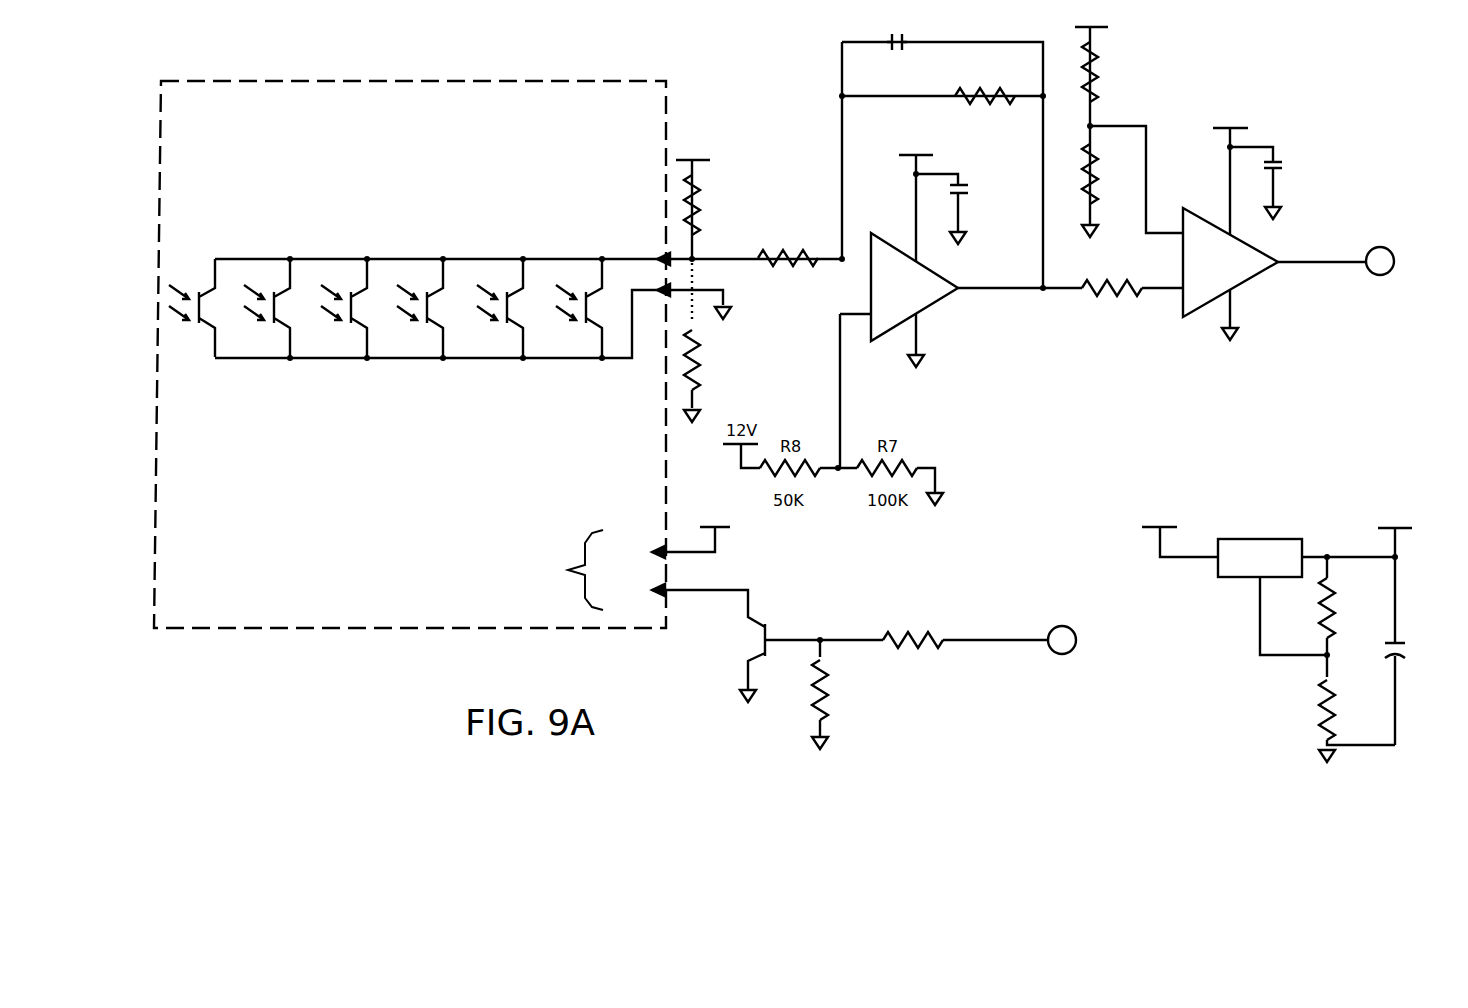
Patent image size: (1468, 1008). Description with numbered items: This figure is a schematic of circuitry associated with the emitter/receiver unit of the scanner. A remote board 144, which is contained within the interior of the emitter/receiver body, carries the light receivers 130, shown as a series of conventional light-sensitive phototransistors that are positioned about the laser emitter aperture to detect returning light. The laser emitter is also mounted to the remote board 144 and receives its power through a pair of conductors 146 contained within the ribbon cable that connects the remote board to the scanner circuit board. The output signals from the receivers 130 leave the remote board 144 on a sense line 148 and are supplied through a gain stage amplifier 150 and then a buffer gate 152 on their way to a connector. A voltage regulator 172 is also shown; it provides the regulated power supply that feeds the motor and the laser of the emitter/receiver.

The light receivers 130 is at (352, 292).
The remote board 144 is at (278, 630).
The pair of conductors 146 is at (700, 587).
The sensor signal line with pull-up resistor R12 148 is at (730, 262).
The gain stage amplifier 150 is at (963, 300).
The buffer gate 152 is at (1183, 327).
The voltage regulator 172 is at (1422, 571).